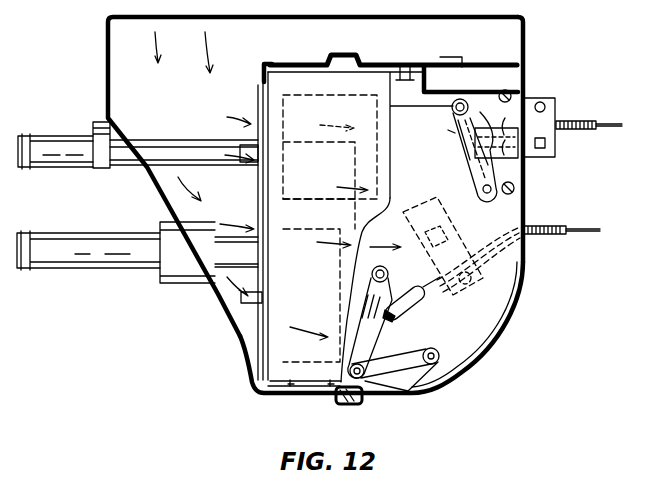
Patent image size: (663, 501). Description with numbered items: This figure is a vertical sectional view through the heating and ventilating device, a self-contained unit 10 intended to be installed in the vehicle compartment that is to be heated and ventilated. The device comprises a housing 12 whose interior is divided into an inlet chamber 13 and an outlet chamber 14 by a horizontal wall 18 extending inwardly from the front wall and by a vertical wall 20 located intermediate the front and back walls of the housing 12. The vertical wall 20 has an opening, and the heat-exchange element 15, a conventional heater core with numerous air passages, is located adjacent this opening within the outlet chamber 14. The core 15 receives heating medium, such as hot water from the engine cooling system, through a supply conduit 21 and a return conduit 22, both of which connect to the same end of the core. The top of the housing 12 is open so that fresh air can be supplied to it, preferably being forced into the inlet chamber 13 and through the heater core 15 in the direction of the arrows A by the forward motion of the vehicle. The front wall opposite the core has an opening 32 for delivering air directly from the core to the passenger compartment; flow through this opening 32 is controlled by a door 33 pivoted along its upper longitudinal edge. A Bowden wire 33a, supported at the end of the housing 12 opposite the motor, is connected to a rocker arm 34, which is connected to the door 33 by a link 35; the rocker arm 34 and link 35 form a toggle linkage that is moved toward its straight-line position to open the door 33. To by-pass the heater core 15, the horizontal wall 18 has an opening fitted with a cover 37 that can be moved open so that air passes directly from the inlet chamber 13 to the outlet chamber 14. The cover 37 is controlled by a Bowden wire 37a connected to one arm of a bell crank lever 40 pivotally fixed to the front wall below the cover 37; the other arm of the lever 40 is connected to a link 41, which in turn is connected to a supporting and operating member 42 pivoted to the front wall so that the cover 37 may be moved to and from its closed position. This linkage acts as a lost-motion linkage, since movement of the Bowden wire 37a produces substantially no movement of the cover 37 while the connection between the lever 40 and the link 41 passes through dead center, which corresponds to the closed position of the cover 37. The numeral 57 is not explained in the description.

The self-contained unit 10 is at (524, 50).
The housing 12 is at (104, 52).
The inlet chamber 13 is at (187, 117).
The outlet chamber 14 is at (487, 298).
The heat-exchange element 15 is at (390, 153).
The horizontal wall 18 is at (303, 62).
The vertical wall 20 is at (258, 80).
The supply conduit 21 is at (58, 264).
The return conduit 22 is at (60, 138).
The opening 32 is at (364, 402).
The door 33 is at (484, 347).
The Bowden wire 33a is at (557, 229).
The rocker arm 34 is at (378, 332).
The link 35 is at (414, 366).
The cover 37 is at (496, 138).
The Bowden wire 37a is at (612, 112).
The bell crank lever 40 is at (487, 166).
The link 41 is at (452, 111).
The supporting and operating member 42 is at (426, 82).
The bolt 57 is at (448, 63).
The arrows A is at (197, 187).